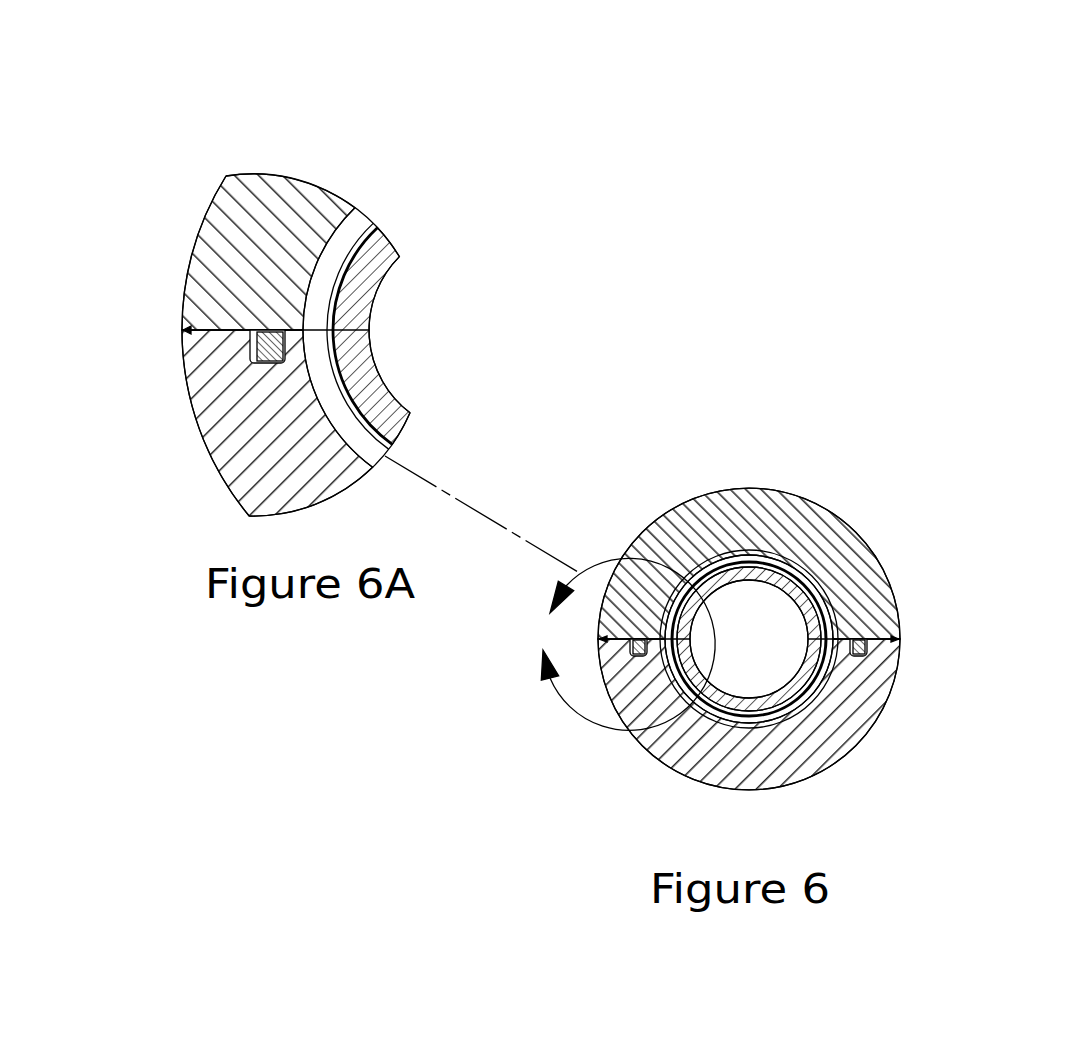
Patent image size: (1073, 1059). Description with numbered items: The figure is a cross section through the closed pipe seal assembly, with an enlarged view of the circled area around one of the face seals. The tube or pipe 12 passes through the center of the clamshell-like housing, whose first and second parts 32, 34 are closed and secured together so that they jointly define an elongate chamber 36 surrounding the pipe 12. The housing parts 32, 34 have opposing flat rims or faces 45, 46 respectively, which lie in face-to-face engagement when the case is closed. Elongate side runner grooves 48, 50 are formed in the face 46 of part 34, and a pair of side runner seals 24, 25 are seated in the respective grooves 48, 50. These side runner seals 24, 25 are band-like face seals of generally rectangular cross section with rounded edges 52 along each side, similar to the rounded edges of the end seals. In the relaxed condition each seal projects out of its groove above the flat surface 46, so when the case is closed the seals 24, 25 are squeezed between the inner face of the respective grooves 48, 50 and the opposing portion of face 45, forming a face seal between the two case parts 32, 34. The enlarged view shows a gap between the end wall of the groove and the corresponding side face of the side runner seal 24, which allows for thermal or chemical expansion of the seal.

In FIG. 6A, the pipe 12 is at (373, 262).
In FIG. 6, the pipe 12 is at (793, 583).
In FIG. 6A, the side runner seal 24 is at (287, 347).
In FIG. 6, the side runner seal 24 is at (638, 636).
In FIG. 6, the side runner seal 25 is at (862, 638).
In FIG. 6A, the first housing part 32 is at (288, 200).
In FIG. 6, the first housing part 32 is at (768, 513).
In FIG. 6A, the second housing part 34 is at (270, 448).
In FIG. 6, the second housing part 34 is at (853, 718).
In FIG. 6A, the chamber 36 is at (333, 392).
In FIG. 6, the chamber 36 is at (717, 717).
In FIG. 6A, the flat rim or face 45 is at (201, 288).
In FIG. 6A, the flat rim or face 46 is at (185, 348).
In FIG. 6, the side runner groove 48 is at (617, 660).
In FIG. 6A, the side runner groove 50 is at (215, 327).
In FIG. 6, the side runner groove 50 is at (870, 647).
In FIG. 6A, the rounded edges 52 is at (260, 328).